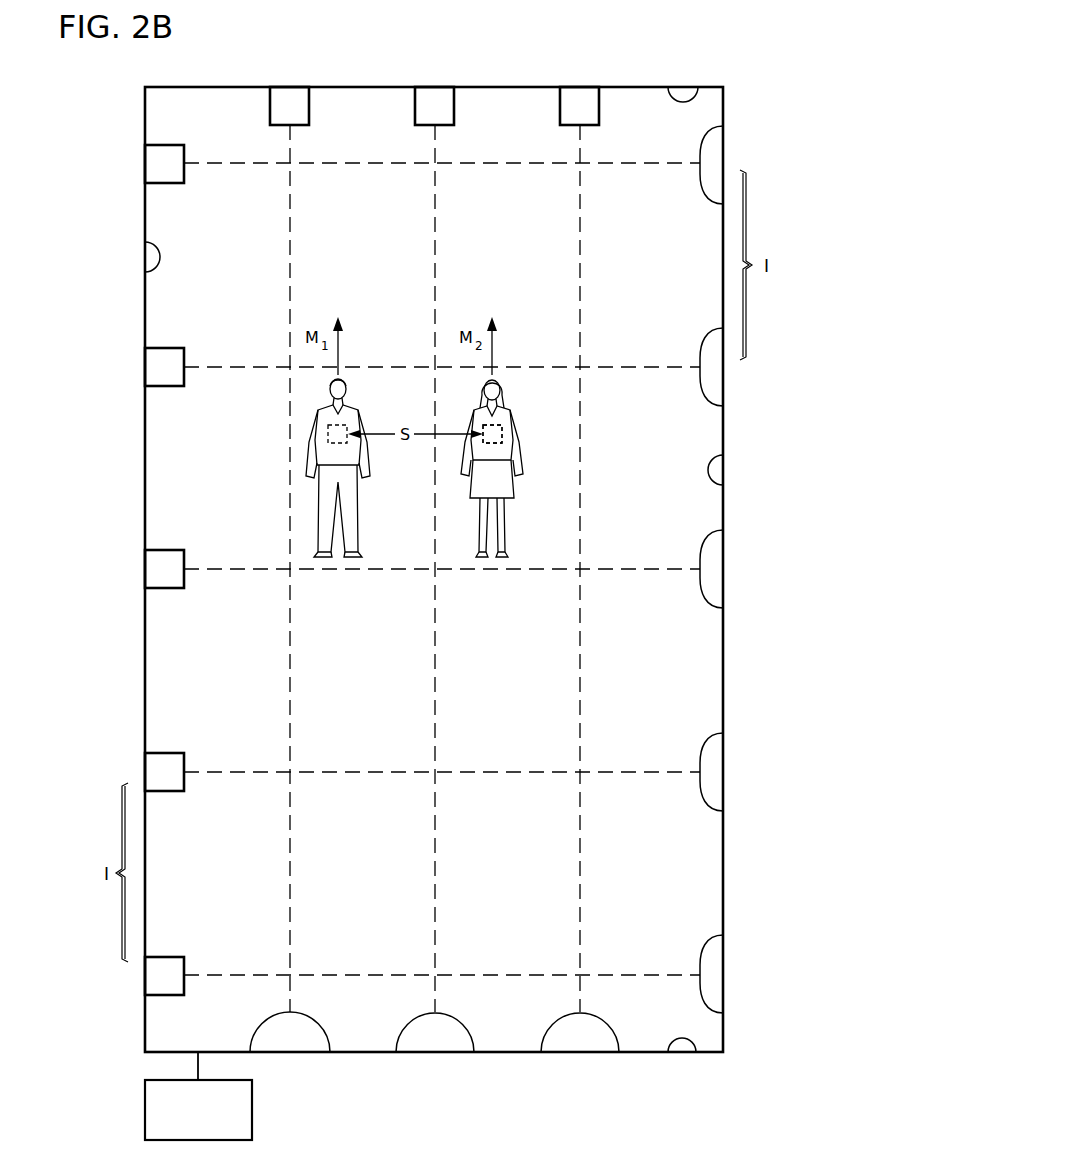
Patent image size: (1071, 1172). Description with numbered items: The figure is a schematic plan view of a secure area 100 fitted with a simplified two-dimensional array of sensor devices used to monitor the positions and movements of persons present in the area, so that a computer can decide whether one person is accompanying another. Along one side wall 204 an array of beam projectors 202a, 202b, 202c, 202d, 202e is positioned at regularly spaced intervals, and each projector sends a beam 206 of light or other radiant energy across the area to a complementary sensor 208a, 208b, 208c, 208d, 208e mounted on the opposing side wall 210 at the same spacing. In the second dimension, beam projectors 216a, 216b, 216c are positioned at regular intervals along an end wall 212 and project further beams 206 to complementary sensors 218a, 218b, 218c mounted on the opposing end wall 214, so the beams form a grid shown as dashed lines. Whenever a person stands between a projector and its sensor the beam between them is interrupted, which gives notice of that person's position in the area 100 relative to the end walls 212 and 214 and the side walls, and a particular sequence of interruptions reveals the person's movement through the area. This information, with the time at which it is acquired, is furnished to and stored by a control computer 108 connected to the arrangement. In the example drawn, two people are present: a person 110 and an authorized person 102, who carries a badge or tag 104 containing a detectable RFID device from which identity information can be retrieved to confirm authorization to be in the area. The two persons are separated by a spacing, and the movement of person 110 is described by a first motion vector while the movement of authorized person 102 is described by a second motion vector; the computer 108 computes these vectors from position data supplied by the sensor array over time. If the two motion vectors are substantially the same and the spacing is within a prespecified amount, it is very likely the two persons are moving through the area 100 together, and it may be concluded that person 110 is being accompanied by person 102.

The area 100 is at (784, 54).
The person 102 is at (505, 520).
The badge or tag 104 is at (512, 424).
The computer 108 is at (145, 1108).
The person 110 is at (350, 520).
The beam projector 202a is at (151, 163).
The beam projector 202b is at (151, 366).
The beam projector 202c is at (151, 568).
The beam projector 202d is at (151, 771).
The beam projector 202e is at (151, 977).
The side wall 204 is at (150, 262).
The beam 206 is at (508, 165).
The sensor 208a is at (718, 152).
The sensor 208b is at (717, 377).
The sensor 208c is at (717, 568).
The sensor 208d is at (717, 773).
The sensor 208e is at (717, 976).
The side wall 210 is at (724, 484).
The end wall 212 is at (695, 86).
The end wall 214 is at (692, 1053).
The beam projector 216a is at (290, 98).
The beam projector 216b is at (435, 96).
The beam projector 216c is at (580, 96).
The sensor 218a is at (290, 1045).
The sensor 218b is at (435, 1045).
The sensor 218c is at (580, 1045).